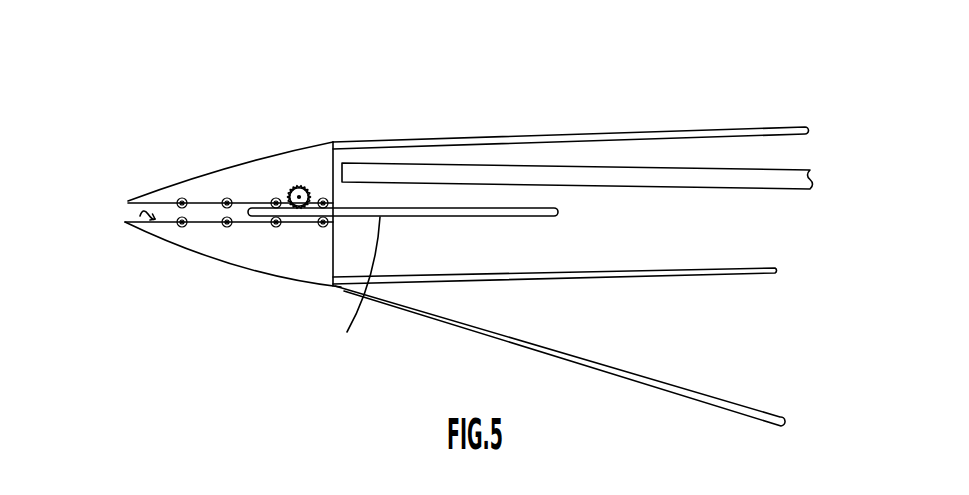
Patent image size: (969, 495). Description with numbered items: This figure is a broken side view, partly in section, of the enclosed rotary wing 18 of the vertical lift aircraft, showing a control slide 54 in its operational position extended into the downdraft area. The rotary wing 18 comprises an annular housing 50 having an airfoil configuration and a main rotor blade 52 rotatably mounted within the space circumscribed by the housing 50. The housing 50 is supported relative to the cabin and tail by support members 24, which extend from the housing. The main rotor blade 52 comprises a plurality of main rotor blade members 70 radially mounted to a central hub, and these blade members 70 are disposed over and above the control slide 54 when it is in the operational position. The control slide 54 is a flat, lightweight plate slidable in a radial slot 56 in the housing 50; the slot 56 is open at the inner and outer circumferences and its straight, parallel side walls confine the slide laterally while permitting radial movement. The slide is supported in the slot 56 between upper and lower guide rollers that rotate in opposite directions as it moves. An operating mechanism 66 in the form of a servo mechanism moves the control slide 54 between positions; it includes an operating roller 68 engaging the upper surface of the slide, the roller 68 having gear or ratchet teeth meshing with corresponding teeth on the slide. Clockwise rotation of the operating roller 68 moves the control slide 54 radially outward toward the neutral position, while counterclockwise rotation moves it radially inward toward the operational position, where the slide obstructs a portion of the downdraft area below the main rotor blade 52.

The enclosed rotary wing 18 is at (318, 128).
The support member 24 is at (647, 130).
The housing 50 is at (245, 272).
The main rotor blade 52 is at (715, 163).
The control slide 54 is at (353, 295).
The slot 56 is at (137, 221).
The operating mechanism 66 is at (292, 183).
The operating roller 68 is at (307, 187).
The main rotor blade member 70 is at (513, 167).